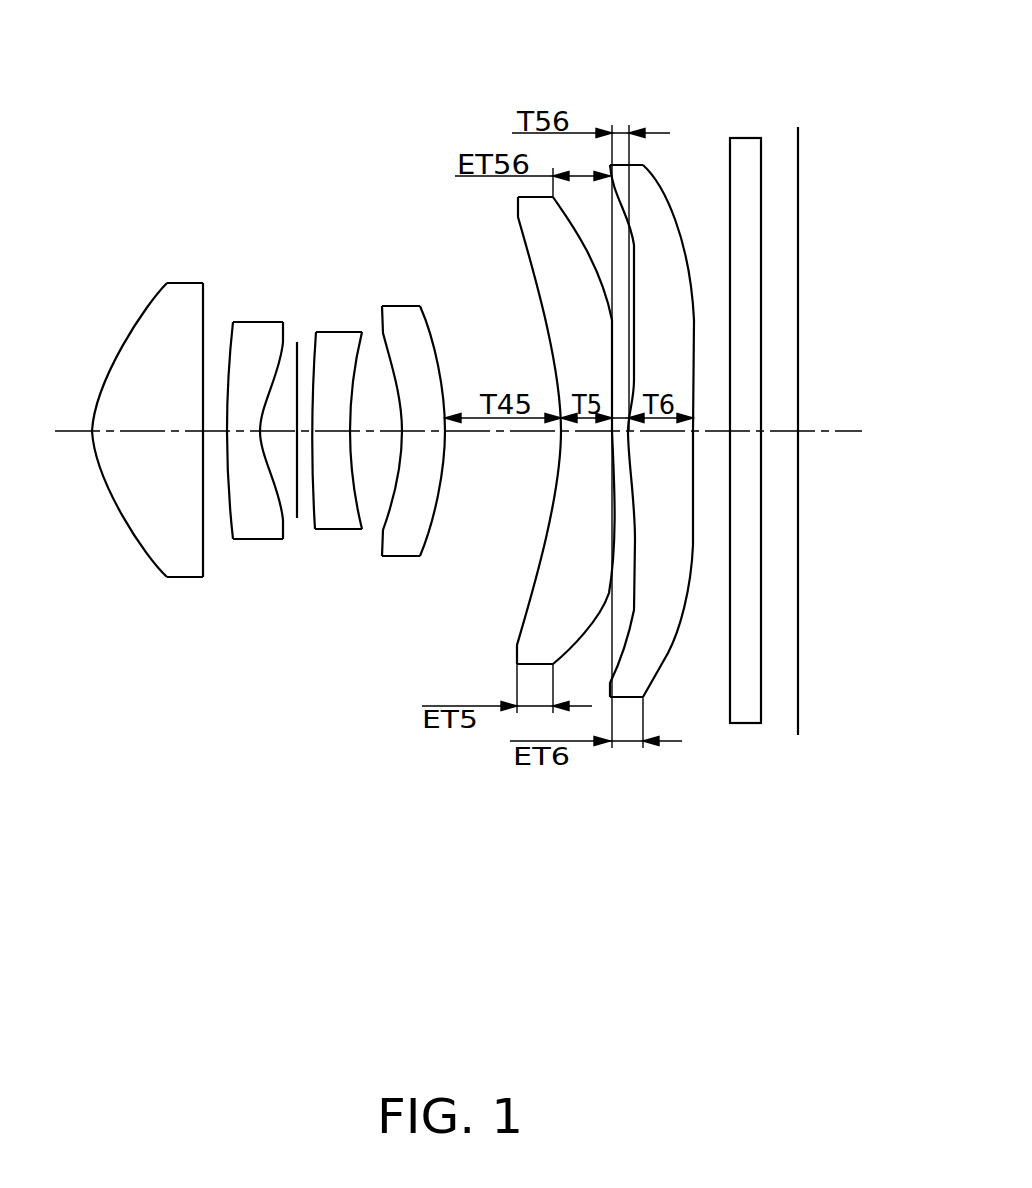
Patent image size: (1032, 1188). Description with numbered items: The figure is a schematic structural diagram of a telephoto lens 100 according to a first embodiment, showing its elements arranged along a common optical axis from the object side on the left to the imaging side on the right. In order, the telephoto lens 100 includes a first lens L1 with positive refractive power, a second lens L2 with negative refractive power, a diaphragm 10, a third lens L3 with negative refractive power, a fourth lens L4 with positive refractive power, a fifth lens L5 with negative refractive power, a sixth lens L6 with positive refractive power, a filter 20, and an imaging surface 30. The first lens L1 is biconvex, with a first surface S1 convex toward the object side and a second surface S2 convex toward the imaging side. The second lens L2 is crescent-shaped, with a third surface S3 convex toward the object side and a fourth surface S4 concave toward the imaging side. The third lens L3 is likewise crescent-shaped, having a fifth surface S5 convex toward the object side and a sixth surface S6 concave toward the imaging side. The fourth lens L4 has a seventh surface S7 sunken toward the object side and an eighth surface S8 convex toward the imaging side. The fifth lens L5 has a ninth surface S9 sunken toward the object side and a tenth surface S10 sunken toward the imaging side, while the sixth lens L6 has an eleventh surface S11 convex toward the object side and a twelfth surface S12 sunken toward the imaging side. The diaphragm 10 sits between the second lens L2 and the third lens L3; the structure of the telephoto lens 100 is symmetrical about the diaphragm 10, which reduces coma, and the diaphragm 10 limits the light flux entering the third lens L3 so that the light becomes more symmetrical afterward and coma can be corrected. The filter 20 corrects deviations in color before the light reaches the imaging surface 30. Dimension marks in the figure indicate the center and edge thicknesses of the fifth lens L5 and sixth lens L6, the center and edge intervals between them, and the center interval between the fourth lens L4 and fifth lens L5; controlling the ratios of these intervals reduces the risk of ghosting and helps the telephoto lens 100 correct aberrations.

The telephoto lens 100 is at (505, 62).
The first lens L1 is at (155, 425).
The second lens L2 is at (239, 472).
The third lens L3 is at (341, 453).
The fourth lens L4 is at (424, 433).
The fifth lens L5 is at (524, 430).
The sixth lens L6 is at (742, 474).
The first surface S1 is at (142, 556).
The second surface S2 is at (205, 305).
The third surface S3 is at (232, 513).
The fourth surface S4 is at (277, 365).
The fifth surface S5 is at (315, 360).
The sixth surface S6 is at (355, 368).
The seventh surface S7 is at (390, 507).
The eighth surface S8 is at (435, 346).
The ninth surface S9 is at (528, 600).
The tenth surface S10 is at (582, 632).
The eleventh surface S11 is at (635, 612).
The twelfth surface S12 is at (667, 658).
The diaphragm 10 is at (296, 518).
The filter 20 is at (745, 148).
The imaging surface 30 is at (800, 235).